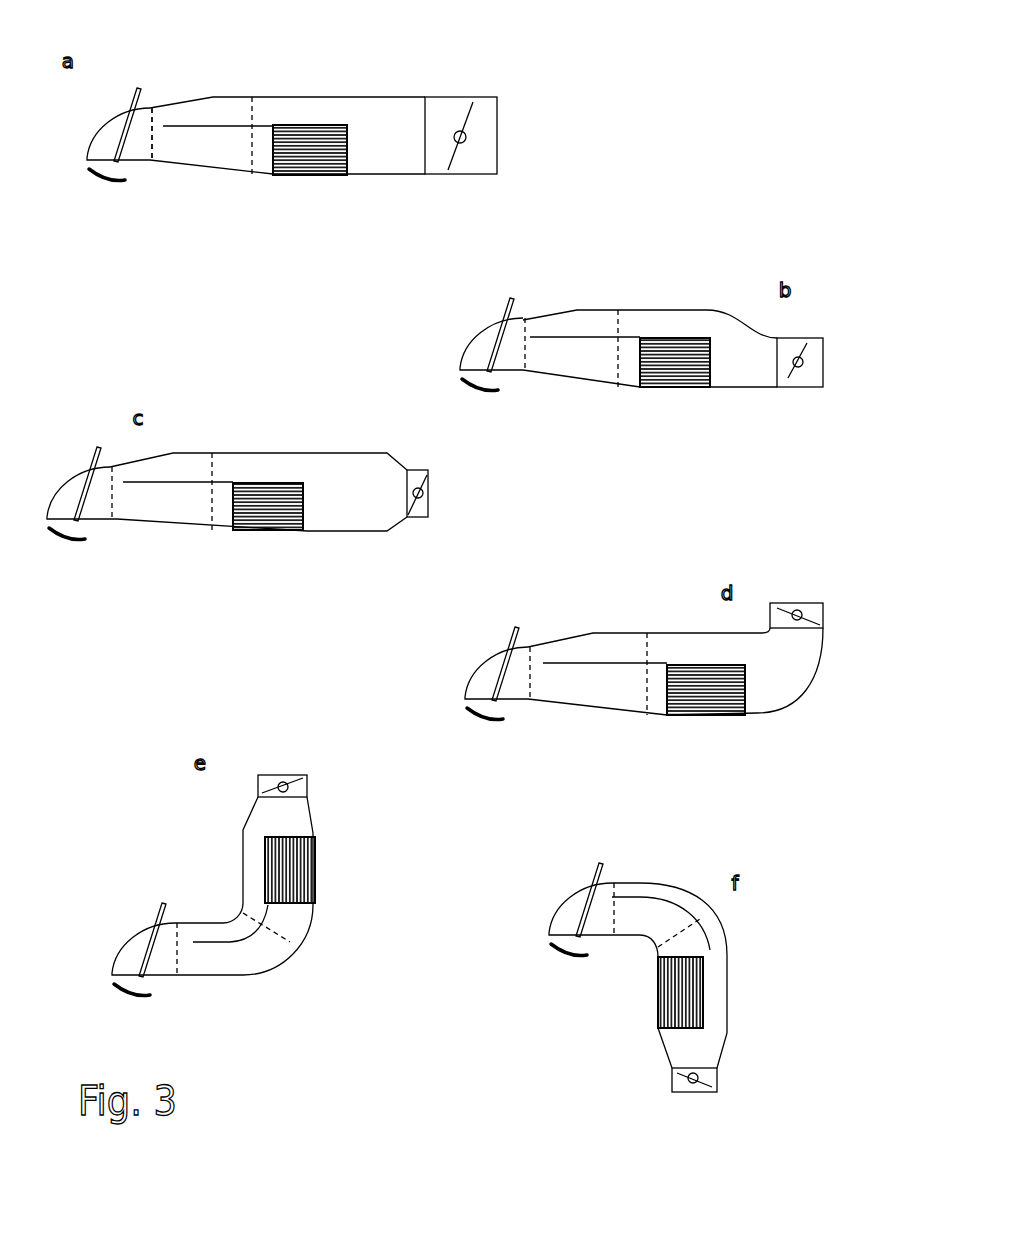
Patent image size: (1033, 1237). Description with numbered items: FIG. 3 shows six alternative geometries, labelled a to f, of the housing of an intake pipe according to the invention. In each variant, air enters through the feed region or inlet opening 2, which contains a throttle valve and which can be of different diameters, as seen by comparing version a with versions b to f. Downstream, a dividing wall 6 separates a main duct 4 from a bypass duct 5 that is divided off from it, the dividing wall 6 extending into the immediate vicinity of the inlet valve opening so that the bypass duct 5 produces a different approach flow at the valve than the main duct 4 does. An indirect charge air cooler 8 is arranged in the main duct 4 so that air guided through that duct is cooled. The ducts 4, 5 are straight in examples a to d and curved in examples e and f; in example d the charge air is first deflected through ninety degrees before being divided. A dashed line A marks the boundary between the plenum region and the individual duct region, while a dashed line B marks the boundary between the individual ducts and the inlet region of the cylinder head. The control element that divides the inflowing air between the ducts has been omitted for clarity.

The inlet opening 2 is at (477, 152).
The main duct 4 is at (262, 163).
The bypass duct 5 is at (235, 107).
The dividing wall 6 is at (225, 125).
The charge air cooler 8 is at (313, 165).
The dashed line A is at (250, 140).
The dashed line B is at (150, 145).